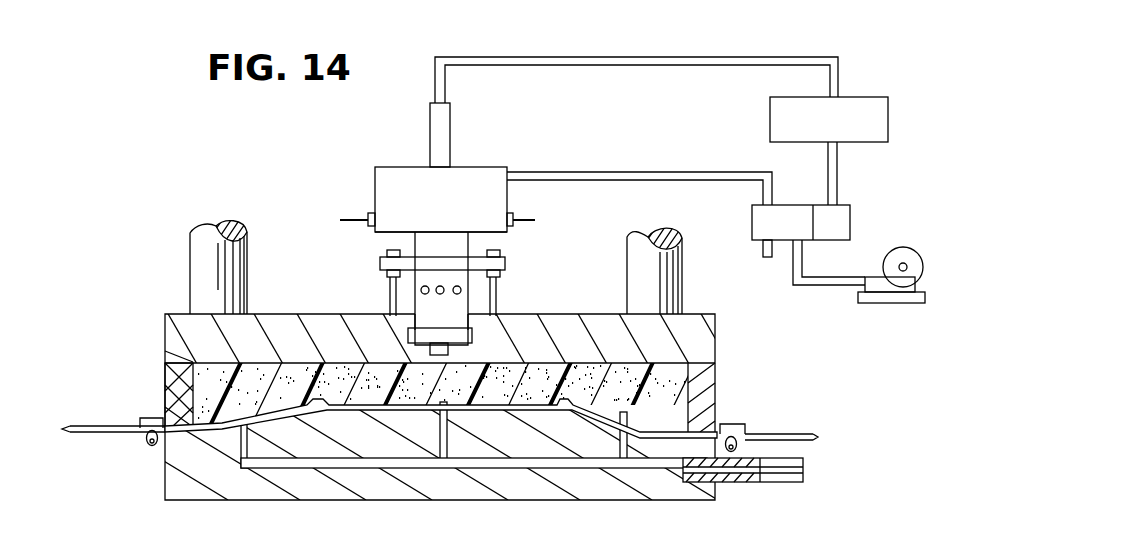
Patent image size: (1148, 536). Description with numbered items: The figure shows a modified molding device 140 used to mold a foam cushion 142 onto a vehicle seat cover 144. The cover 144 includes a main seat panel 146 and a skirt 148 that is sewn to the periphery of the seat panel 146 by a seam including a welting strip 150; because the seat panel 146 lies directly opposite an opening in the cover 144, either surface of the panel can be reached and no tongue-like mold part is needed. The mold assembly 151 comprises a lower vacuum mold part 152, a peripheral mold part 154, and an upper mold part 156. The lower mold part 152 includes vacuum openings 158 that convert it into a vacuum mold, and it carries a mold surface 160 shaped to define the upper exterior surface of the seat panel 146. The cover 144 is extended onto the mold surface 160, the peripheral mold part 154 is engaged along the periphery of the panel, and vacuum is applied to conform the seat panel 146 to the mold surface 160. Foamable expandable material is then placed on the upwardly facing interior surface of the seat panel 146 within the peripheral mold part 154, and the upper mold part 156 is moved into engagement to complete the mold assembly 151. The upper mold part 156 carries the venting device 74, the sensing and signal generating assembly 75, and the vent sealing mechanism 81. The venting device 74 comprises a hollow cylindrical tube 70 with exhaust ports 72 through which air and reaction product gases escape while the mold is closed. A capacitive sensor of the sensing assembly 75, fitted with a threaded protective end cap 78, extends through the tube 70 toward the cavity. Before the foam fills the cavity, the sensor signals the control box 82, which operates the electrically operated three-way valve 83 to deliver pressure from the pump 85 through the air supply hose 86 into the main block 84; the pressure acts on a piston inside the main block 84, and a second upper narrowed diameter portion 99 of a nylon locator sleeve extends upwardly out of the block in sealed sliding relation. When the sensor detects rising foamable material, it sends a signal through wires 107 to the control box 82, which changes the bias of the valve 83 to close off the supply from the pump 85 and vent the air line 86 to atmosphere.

The hollow cylindrical tube 70 is at (425, 243).
The exhaust ports 72 is at (420, 291).
The venting device 74 is at (352, 205).
The sensing and signal generating assembly 75 is at (410, 352).
The threaded protective end cap 78 is at (440, 348).
The vent sealing mechanism 81 is at (478, 326).
The control box 82 is at (836, 133).
The three-way valve 83 is at (768, 221).
The main block 84 is at (393, 176).
The pump 85 is at (900, 260).
The air supply hose 86 is at (606, 181).
The second upper narrowed diameter portion 99 is at (445, 118).
The wires 107 is at (705, 57).
The molding device 140 is at (172, 294).
The foam cushion 142 is at (205, 380).
The cover 144 is at (100, 442).
The main seat panel 146 is at (538, 412).
The skirt 148 is at (790, 437).
The welting strip 150 is at (155, 420).
The mold assembly 151 is at (158, 339).
The lower vacuum mold part 152 is at (165, 476).
The peripheral mold part 154 is at (708, 384).
The upper mold part 156 is at (684, 335).
The vacuum openings 158 is at (253, 450).
The mold surface 160 is at (546, 405).